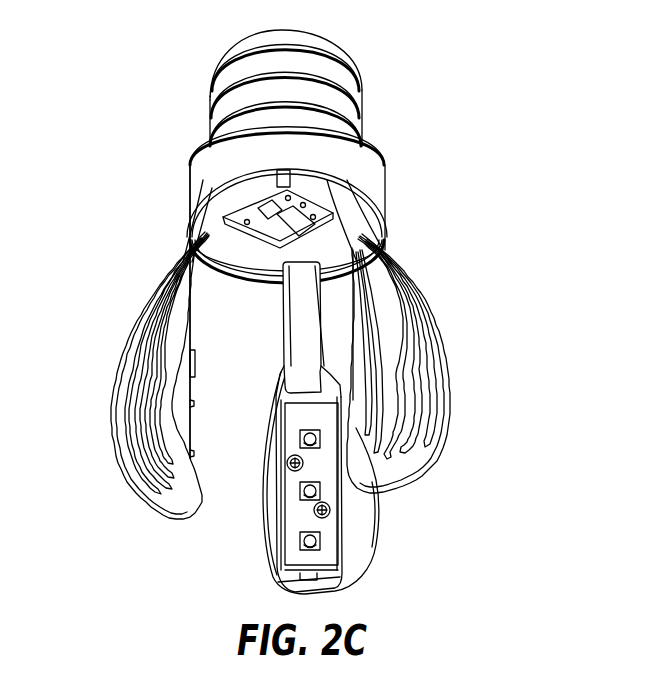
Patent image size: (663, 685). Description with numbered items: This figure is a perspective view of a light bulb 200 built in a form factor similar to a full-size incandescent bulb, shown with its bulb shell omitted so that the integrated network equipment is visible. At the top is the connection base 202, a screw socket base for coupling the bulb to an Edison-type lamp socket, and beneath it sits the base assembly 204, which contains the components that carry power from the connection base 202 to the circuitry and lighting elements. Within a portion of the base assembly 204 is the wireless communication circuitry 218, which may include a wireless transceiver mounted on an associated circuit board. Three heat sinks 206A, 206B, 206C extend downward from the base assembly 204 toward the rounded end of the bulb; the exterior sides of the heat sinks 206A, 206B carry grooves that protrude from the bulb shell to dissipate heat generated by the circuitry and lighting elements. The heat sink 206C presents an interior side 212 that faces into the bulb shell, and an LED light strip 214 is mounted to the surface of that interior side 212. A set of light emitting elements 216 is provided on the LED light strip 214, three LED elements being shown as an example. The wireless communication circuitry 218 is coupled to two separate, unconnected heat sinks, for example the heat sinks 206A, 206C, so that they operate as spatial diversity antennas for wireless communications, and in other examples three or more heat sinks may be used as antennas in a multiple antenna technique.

The light bulb 200 is at (178, 64).
The connection base 202 is at (345, 60).
The base assembly 204 is at (367, 144).
The wireless communication circuitry 218 is at (258, 230).
The heat sink 206A is at (140, 490).
The heat sink 206B is at (445, 351).
The heat sink 206C is at (377, 520).
The interior side 212 is at (347, 553).
The LED light strip 214 is at (293, 561).
The light emitting elements 216 is at (300, 492).